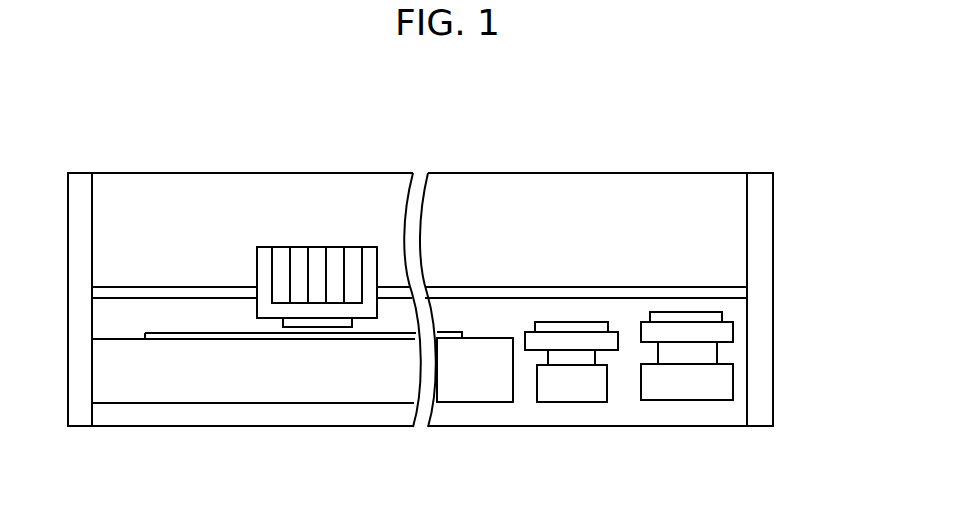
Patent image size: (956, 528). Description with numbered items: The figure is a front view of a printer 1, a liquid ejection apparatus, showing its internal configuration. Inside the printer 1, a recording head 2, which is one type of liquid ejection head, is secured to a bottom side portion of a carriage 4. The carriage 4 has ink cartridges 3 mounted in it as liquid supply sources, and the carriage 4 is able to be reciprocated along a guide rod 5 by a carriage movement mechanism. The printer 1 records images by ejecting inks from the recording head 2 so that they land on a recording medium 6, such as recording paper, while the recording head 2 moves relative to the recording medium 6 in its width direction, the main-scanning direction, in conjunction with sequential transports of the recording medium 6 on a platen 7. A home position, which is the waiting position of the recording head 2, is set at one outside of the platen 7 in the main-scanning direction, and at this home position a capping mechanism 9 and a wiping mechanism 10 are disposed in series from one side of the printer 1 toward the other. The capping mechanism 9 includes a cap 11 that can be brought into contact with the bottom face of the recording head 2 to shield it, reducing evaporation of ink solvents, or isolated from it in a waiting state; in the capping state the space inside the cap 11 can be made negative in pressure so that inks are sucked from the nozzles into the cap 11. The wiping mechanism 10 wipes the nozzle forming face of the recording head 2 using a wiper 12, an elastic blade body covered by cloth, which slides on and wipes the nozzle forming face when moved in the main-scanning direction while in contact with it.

The printer 1 is at (712, 162).
The recording head 2 is at (293, 323).
The ink cartridges 3 is at (302, 255).
The carriage 4 is at (372, 257).
The guide rod 5 is at (560, 290).
The recording medium 6 is at (207, 333).
The platen 7 is at (360, 360).
The capping mechanism 9 is at (690, 402).
The wiping mechanism 10 is at (575, 404).
The cap 11 is at (722, 317).
The wiper 12 is at (563, 323).